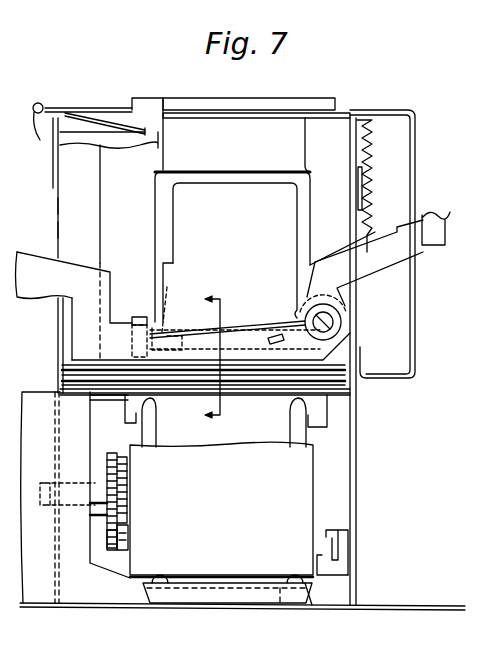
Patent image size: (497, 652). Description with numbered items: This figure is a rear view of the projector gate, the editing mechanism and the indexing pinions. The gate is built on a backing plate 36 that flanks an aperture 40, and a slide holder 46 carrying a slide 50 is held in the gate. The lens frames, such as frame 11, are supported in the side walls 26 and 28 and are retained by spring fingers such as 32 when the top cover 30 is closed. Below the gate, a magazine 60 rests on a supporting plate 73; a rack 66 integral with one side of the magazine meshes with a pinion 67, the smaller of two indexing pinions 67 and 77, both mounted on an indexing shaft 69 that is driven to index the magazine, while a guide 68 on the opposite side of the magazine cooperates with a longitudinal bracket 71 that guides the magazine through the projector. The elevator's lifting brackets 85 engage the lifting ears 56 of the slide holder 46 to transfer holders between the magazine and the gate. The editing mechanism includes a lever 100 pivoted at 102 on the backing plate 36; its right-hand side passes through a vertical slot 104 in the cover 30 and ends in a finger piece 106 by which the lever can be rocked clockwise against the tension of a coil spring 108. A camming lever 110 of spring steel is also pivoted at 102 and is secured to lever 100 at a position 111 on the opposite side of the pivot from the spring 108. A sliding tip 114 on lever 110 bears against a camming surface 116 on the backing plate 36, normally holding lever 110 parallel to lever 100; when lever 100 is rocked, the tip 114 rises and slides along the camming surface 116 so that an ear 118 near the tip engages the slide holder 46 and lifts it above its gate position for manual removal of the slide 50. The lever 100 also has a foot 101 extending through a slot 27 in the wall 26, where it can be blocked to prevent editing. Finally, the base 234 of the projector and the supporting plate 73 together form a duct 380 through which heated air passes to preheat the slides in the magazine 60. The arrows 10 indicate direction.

The direction arrows 10 is at (200, 358).
The frame 11 is at (70, 143).
The side wall 26 is at (58, 207).
The slot 27 is at (58, 232).
The side wall 28 is at (355, 221).
The top cover 30 is at (63, 108).
The spring finger 32 is at (118, 119).
The backing plate 36 is at (120, 252).
The aperture 40 is at (247, 227).
The slide holder 46 is at (311, 432).
The slide 50 is at (265, 434).
The lifting ear 56 is at (135, 415).
The magazine 60 is at (258, 502).
The rack 66 is at (123, 545).
The pinion 67 is at (110, 480).
The guide 68 is at (319, 577).
The indexing shaft 69 is at (47, 483).
The longitudinal bracket 71 is at (332, 528).
The supporting plate 73 is at (227, 605).
The pinion 77 is at (108, 533).
The lifting bracket 85 is at (128, 430).
The lever 100 is at (379, 260).
The foot 101 is at (50, 288).
The pivot 102 is at (336, 320).
The vertical slot 104 is at (420, 275).
The finger piece 106 is at (426, 212).
The coil spring 108 is at (372, 198).
The camming lever 110 is at (288, 322).
The position 111 is at (268, 340).
The sliding tip 114 is at (150, 342).
The camming surface 116 is at (138, 318).
The ear 118 is at (181, 300).
The base 234 is at (118, 606).
The duct 380 is at (309, 600).